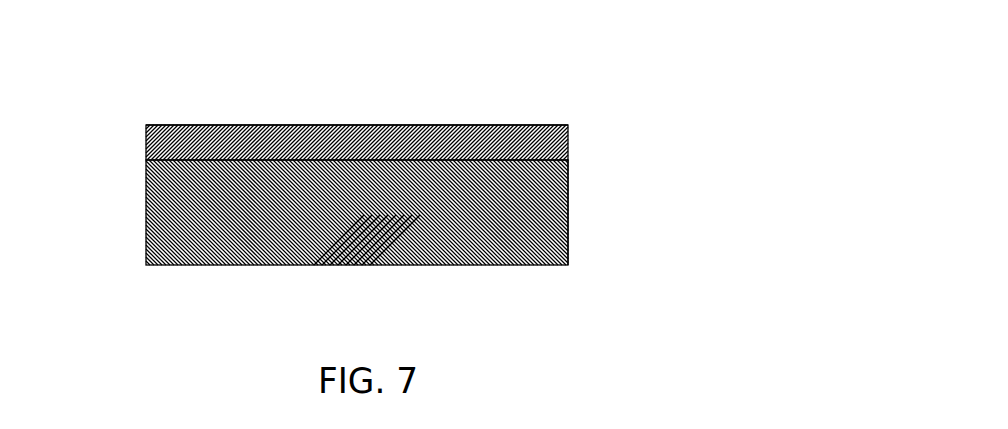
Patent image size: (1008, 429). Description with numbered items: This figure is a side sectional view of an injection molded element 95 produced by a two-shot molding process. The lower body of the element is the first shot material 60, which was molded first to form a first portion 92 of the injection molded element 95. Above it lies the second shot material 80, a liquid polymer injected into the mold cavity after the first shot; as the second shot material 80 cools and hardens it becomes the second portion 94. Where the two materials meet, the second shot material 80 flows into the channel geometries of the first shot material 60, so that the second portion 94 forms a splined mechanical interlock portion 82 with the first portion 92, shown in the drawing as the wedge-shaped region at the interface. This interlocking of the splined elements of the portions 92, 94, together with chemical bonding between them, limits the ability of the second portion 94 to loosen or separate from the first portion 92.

The injection molded element 95 is at (359, 168).
The second portion 94 is at (569, 140).
The first portion 92 is at (569, 208).
The second shot material 80 is at (147, 140).
The first shot material 60 is at (146, 229).
The splined mechanical interlock portion 82 is at (380, 261).